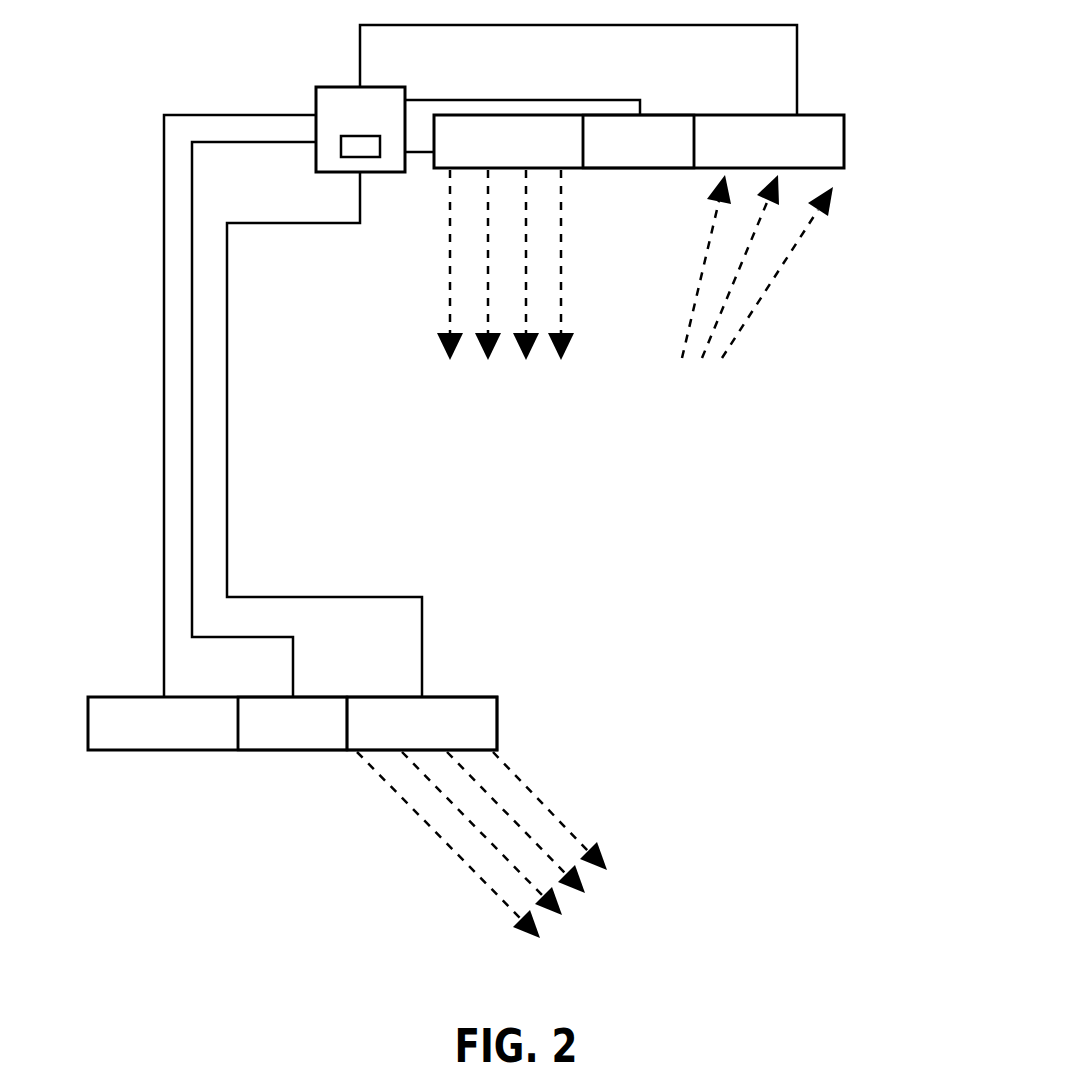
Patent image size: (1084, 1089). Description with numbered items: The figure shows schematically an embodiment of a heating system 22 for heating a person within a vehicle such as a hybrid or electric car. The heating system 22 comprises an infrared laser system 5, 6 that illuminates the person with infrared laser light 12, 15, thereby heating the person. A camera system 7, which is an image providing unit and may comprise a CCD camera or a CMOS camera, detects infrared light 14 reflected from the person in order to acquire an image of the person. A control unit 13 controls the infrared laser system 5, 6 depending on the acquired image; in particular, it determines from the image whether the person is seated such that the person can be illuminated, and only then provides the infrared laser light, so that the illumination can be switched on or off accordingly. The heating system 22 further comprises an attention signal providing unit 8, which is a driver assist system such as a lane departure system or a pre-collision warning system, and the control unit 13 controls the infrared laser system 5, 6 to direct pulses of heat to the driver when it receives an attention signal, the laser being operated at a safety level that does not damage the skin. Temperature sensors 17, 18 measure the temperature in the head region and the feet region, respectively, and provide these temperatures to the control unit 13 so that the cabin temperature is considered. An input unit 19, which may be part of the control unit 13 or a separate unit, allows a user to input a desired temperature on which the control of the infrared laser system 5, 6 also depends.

The infrared laser system 5 is at (571, 170).
The infrared laser system 6 is at (490, 697).
The camera system 7 is at (844, 120).
The attention signal providing unit 8 is at (186, 752).
The infrared laser light 12 is at (388, 269).
The control unit 13 is at (405, 90).
The infrared light 14 is at (809, 305).
The infrared laser light 15 is at (573, 764).
The temperature sensor 17 is at (672, 115).
The temperature sensor 18 is at (288, 752).
The input unit 19 is at (353, 136).
The heating system 22 is at (730, 516).